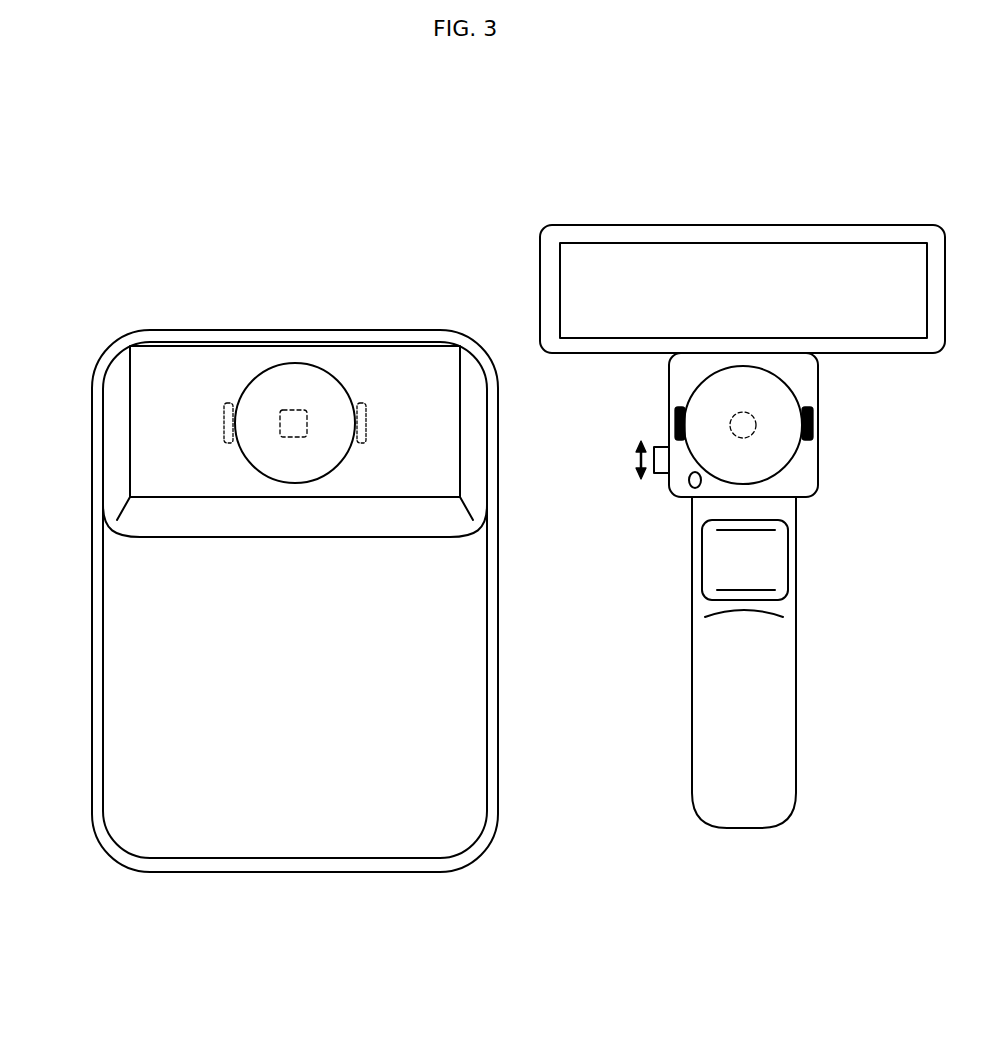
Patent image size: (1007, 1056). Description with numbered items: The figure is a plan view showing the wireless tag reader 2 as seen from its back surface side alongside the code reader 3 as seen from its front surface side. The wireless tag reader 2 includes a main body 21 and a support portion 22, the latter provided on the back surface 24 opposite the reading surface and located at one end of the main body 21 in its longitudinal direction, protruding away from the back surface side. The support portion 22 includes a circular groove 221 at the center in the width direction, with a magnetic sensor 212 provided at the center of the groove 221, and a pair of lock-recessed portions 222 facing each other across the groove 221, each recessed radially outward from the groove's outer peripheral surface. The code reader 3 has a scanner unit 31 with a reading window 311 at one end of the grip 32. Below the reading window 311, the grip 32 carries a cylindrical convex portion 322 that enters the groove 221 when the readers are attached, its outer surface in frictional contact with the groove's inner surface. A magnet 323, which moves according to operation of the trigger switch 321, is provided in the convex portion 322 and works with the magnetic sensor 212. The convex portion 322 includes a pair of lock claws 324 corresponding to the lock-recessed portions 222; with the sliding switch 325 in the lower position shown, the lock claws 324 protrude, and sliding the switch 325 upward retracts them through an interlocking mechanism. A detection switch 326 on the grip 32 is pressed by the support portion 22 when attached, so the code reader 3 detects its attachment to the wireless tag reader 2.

The wireless tag reader 2 is at (345, 249).
The main body 21 is at (108, 753).
The support portion 22 is at (222, 358).
The circular groove 221 is at (297, 362).
The magnetic sensor 212 is at (303, 410).
The lock-recessed portions 222 is at (224, 422).
The back surface 24 is at (155, 583).
The code reader 3 is at (736, 168).
The scanner unit 31 is at (663, 225).
The reading window 311 is at (818, 262).
The grip 32 is at (773, 678).
The trigger switch 321 is at (772, 558).
The convex portion 322 is at (798, 452).
The magnet 323 is at (756, 418).
The lock claws 324 is at (675, 422).
The sliding switch 325 is at (660, 475).
The detection switch 326 is at (693, 490).